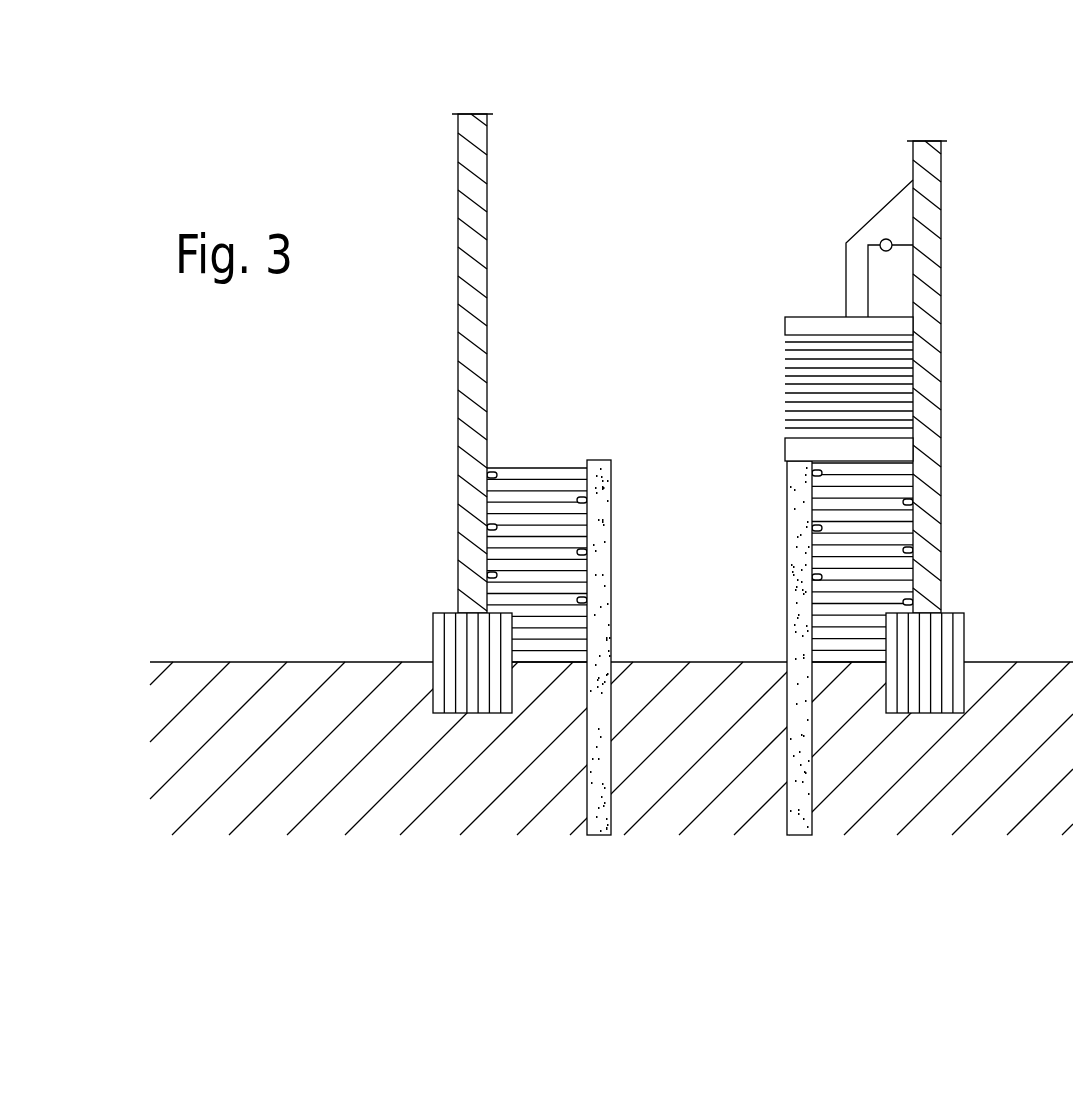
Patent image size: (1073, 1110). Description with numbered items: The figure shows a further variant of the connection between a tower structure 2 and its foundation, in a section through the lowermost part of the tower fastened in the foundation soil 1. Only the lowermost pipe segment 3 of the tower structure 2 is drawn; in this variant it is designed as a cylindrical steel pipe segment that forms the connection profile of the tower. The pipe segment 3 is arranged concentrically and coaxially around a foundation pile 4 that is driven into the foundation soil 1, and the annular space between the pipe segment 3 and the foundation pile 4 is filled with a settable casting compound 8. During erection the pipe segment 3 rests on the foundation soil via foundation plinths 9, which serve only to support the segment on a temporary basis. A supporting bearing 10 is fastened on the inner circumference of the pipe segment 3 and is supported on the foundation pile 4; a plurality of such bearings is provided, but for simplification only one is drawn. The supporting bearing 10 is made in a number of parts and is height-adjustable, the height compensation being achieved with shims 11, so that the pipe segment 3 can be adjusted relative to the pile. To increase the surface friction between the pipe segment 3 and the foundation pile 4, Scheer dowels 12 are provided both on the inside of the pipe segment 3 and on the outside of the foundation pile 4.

The foundation soil 1 is at (410, 800).
The tower structure 2 is at (862, 115).
The pipe segment 3 is at (935, 215).
The foundation pile 4 is at (813, 768).
The settable casting compound 8 is at (850, 547).
The foundation plinth 9 is at (440, 664).
The supporting bearing 10 is at (803, 296).
The shims 11 is at (776, 400).
The Scheer dowels 12 is at (575, 494).